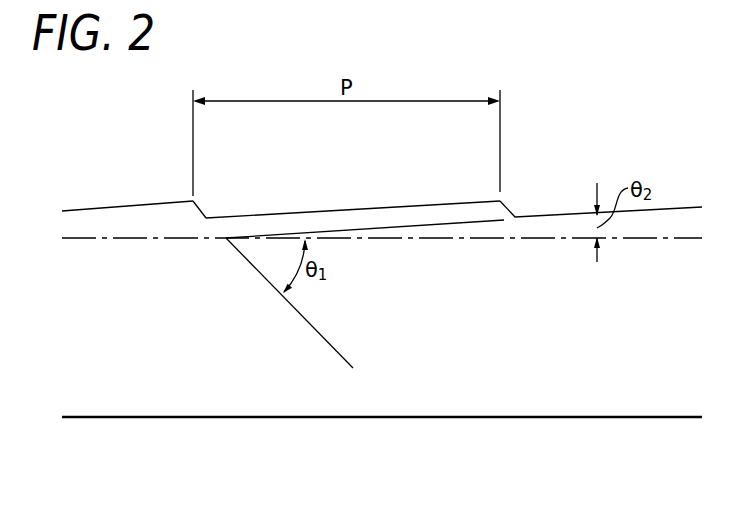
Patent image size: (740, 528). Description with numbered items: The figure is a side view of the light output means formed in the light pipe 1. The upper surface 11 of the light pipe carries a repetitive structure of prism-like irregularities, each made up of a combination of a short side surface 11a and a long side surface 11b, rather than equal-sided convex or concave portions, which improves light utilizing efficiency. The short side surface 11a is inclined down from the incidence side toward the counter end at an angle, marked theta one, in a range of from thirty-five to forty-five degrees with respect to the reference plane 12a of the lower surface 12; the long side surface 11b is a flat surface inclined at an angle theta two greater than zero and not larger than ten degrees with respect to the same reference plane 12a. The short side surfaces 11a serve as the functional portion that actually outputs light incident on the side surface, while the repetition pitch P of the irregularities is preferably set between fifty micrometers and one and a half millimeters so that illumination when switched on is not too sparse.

The light pipe 1 is at (627, 378).
The upper surface of the light pipe 11 is at (533, 190).
The short side surface 11a is at (198, 209).
The long side surface 11b is at (352, 208).
The lower surface 12 is at (512, 419).
The reference plane 12a is at (473, 238).